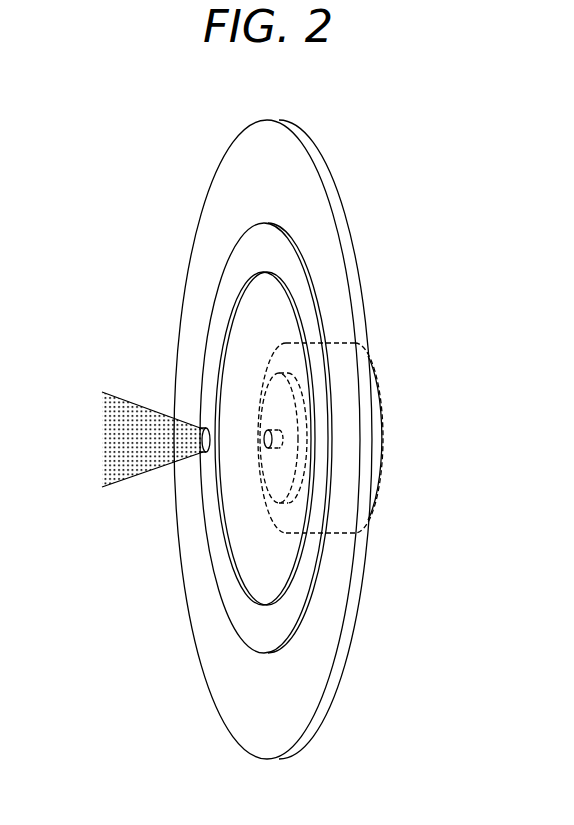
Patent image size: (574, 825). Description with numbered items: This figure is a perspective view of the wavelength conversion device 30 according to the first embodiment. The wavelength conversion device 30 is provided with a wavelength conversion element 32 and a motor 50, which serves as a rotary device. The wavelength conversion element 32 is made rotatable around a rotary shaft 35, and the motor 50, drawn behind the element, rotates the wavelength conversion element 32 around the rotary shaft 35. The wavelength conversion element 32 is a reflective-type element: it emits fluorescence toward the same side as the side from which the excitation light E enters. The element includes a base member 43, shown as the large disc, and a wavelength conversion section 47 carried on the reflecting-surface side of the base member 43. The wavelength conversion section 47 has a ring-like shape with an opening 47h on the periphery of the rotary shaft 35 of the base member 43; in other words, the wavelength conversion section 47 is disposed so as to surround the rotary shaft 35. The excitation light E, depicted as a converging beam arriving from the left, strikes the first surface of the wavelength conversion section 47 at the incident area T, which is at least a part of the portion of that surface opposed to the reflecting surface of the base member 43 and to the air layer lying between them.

The wavelength conversion device 30 is at (246, 439).
The wavelength conversion element 32 is at (202, 439).
The rotary shaft 35 is at (265, 439).
The base member 43 is at (218, 197).
The wavelength conversion section 47 is at (230, 592).
The opening 47h is at (247, 515).
The motor 50 is at (378, 458).
The incident area T is at (212, 455).
The excitation light E is at (127, 401).